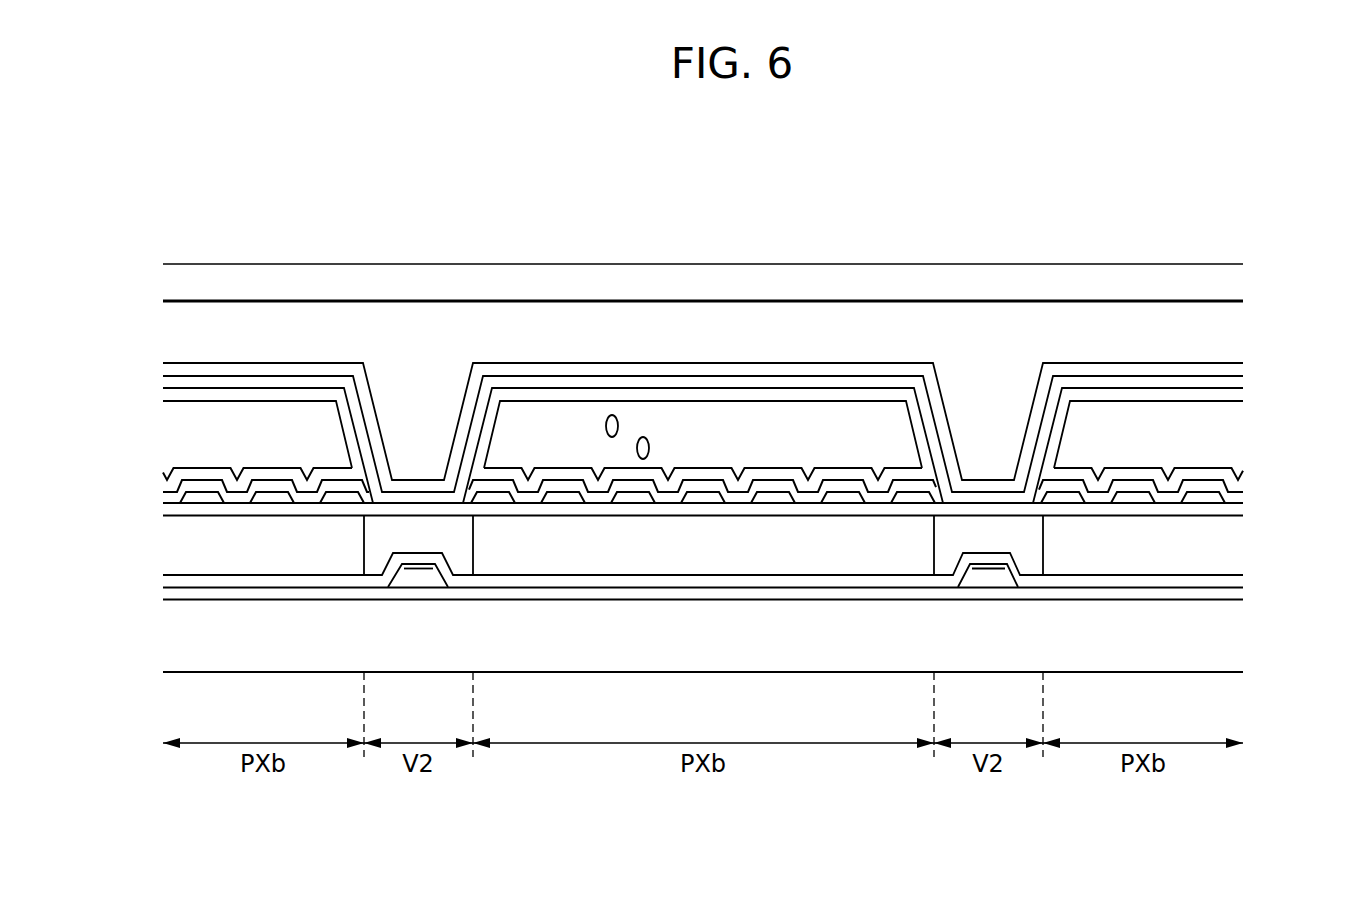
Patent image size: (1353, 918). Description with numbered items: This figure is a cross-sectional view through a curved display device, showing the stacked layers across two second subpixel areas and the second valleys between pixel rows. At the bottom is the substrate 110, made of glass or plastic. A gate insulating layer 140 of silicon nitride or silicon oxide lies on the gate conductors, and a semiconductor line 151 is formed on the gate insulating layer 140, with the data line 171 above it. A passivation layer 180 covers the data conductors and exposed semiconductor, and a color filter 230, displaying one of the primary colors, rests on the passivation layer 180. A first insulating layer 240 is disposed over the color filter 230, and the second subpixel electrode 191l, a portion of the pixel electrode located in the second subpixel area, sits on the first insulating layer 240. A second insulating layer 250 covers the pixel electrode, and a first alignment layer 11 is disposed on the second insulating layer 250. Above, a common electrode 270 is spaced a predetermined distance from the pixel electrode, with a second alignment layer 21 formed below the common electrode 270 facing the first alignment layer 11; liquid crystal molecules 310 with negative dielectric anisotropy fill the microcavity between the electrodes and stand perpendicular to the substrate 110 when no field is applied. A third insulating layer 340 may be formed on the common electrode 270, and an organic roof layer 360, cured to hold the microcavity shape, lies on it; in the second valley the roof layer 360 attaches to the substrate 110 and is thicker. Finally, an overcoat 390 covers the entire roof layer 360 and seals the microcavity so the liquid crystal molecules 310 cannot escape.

The first alignment layer 11 is at (1070, 475).
The second alignment layer 21 is at (565, 395).
The substrate 110 is at (1236, 638).
The gate insulating layer 140 is at (523, 595).
The semiconductor line 151 is at (405, 585).
The data line 171 is at (428, 574).
The passivation layer 180 is at (588, 584).
The second subpixel electrode 191l is at (703, 497).
The color filter 230 is at (305, 559).
The first insulating layer 240 is at (843, 512).
The second insulating layer 250 is at (1140, 487).
The common electrode 270 is at (738, 385).
The liquid crystal molecules 310 is at (641, 437).
The third insulating layer 340 is at (856, 370).
The roof layer 360 is at (1236, 333).
The overcoat 390 is at (1236, 284).